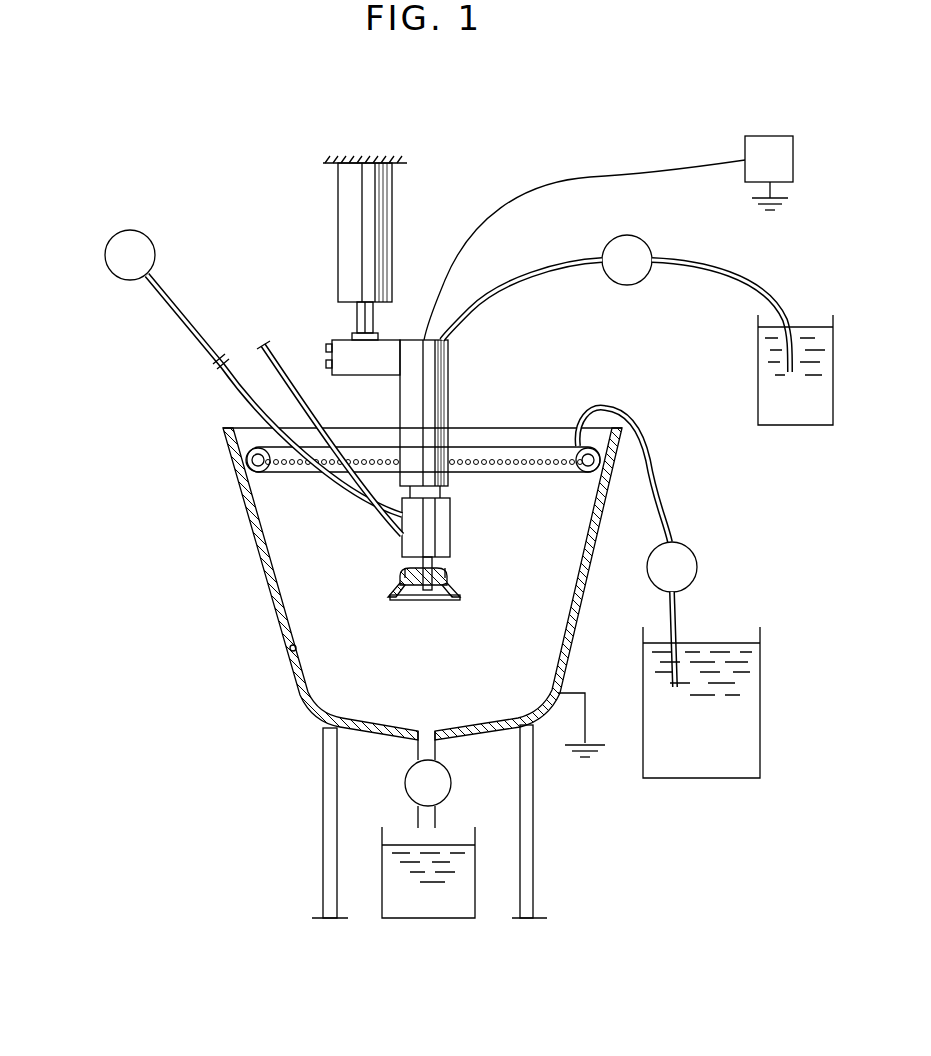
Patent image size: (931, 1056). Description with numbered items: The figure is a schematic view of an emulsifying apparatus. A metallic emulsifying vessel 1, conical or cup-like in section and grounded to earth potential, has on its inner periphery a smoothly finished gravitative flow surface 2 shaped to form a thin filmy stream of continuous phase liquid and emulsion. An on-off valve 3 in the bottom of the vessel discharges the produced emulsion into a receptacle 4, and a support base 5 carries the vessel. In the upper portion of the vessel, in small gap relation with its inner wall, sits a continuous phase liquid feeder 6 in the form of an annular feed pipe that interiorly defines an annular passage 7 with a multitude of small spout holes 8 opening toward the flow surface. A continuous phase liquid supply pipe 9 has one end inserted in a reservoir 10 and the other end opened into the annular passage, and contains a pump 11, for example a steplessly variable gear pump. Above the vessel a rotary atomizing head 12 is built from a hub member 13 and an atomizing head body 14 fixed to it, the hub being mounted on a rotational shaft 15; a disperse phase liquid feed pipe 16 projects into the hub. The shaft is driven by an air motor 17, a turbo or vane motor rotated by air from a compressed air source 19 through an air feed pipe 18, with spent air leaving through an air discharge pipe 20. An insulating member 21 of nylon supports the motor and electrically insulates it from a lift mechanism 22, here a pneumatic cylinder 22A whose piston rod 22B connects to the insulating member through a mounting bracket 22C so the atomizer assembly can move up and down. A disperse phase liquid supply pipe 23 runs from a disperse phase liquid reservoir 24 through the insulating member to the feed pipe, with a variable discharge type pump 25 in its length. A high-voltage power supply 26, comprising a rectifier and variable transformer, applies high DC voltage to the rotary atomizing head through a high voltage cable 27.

The emulsifying vessel 1 is at (262, 575).
The gravitative flow surface 2 is at (290, 646).
The on-off valve 3 is at (405, 783).
The receptacle 4 is at (434, 905).
The support base 5 is at (535, 855).
The continuous phase liquid feeder 6 is at (358, 447).
The annular passage 7 is at (600, 408).
The small spout holes 8 is at (250, 462).
The continuous phase liquid supply pipe 9 is at (677, 605).
The reservoir 10 is at (748, 698).
The pump 11 is at (698, 565).
The rotary atomizing head 12 is at (458, 592).
The hub member 13 is at (400, 578).
The atomizing head body 14 is at (395, 598).
The rotational shaft 15 is at (420, 568).
The disperse phase liquid feed pipe 16 is at (437, 568).
The air motor 17 is at (435, 517).
The air feed pipe 18 is at (228, 387).
The compressed air source 19 is at (128, 230).
The air discharge pipe 20 is at (268, 360).
The insulating member 21 is at (452, 365).
The lift mechanism 22 is at (392, 205).
The cylinder 22A is at (338, 210).
The piston rod 22B is at (357, 320).
The mounting bracket 22C is at (347, 370).
The disperse phase liquid supply pipe 23 is at (720, 278).
The disperse phase liquid reservoir 24 is at (758, 410).
The variable discharge type pump 25 is at (627, 286).
The high-voltage power supply 26 is at (768, 136).
The high voltage cable 27 is at (605, 176).